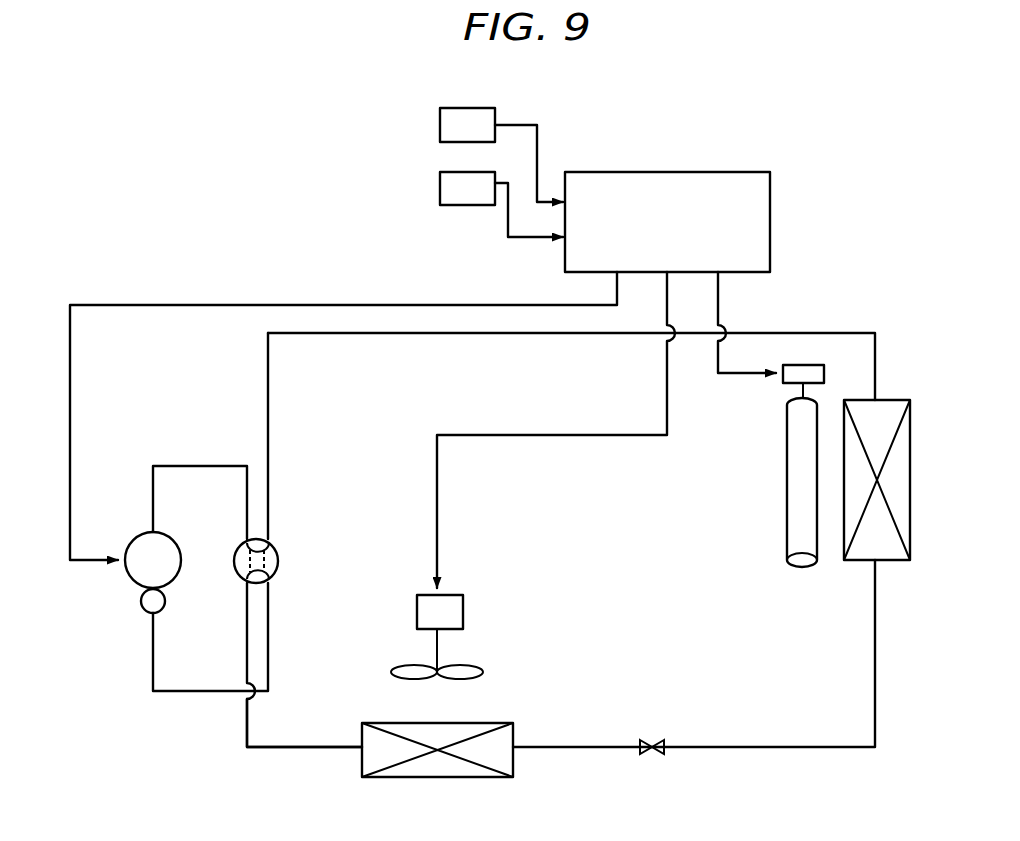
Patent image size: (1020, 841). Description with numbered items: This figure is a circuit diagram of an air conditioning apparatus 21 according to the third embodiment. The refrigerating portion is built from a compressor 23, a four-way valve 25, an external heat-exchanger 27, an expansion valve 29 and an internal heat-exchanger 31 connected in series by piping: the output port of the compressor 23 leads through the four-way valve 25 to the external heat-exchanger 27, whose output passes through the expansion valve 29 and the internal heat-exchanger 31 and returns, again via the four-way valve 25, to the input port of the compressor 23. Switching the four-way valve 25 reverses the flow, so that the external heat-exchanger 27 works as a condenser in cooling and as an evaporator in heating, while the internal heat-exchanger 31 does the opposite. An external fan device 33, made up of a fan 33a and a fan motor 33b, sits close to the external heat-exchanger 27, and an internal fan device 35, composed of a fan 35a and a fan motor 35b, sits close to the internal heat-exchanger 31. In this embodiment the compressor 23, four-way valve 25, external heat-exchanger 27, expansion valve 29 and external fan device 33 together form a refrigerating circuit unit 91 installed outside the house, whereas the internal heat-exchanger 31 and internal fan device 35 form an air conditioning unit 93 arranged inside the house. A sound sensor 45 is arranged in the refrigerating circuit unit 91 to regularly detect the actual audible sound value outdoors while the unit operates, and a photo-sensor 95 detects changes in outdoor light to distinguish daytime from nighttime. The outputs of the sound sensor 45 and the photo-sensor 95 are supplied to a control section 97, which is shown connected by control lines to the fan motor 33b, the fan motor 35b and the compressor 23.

The air conditioning apparatus 21 is at (172, 298).
The compressor 23 is at (128, 541).
The four-way valve 25 is at (275, 548).
The external heat-exchanger 27 is at (450, 778).
The expansion valve 29 is at (665, 740).
The internal heat-exchanger 31 is at (845, 565).
The external fan device 33 is at (482, 605).
The fan 33a is at (483, 670).
The fan motor 33b is at (463, 596).
The internal fan device 35 is at (758, 470).
The fan 35a is at (795, 547).
The fan motor 35b is at (785, 386).
The sound sensor 45 is at (474, 72).
The refrigerating circuit unit 91 is at (217, 708).
The air conditioning unit 93 is at (843, 529).
The photo-sensor 95 is at (440, 187).
The control section 97 is at (722, 172).